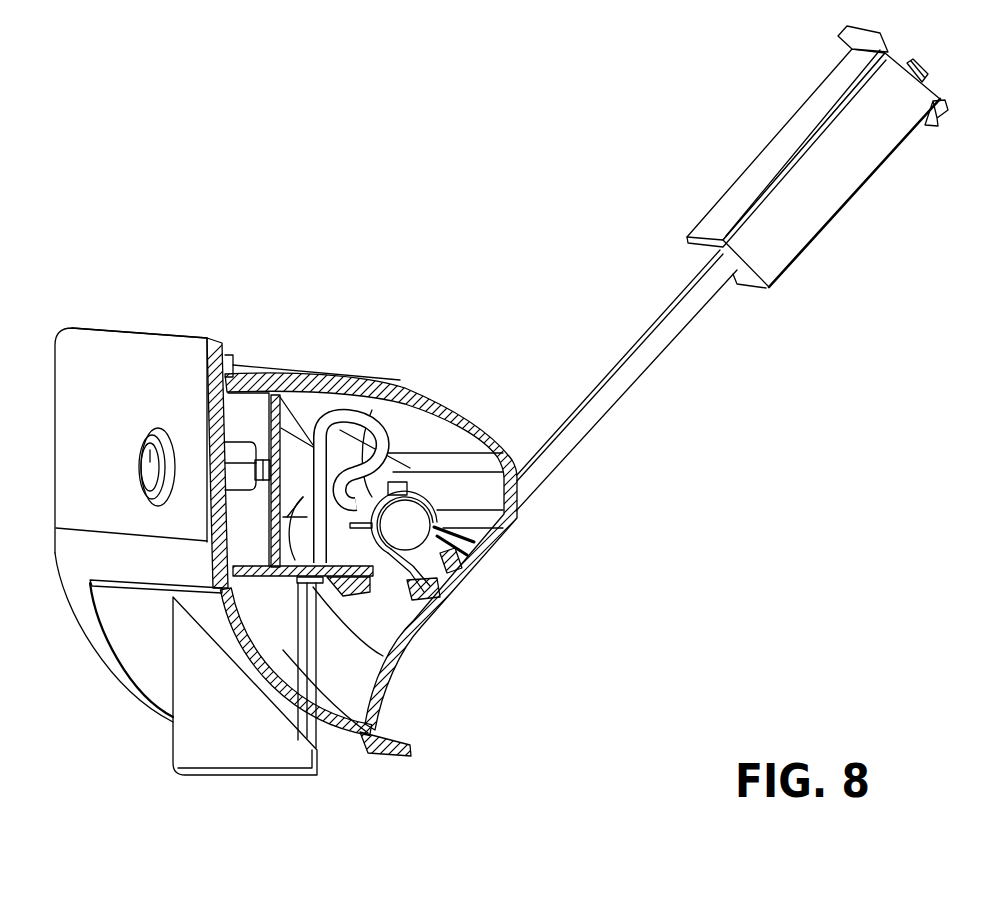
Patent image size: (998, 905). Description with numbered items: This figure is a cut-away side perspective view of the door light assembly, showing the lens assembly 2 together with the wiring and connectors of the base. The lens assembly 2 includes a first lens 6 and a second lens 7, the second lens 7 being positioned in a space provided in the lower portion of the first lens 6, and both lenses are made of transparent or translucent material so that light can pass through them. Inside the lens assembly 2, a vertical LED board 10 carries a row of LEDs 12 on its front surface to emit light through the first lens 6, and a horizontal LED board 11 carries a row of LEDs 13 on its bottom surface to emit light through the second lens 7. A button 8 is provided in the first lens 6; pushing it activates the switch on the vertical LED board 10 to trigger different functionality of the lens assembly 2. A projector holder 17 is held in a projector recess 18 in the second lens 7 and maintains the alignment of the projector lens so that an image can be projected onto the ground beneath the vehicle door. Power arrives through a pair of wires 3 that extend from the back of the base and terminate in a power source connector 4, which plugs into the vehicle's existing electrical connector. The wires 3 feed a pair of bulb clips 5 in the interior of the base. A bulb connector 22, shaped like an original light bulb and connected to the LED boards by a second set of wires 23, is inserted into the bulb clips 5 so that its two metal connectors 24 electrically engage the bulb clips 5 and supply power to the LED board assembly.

The lens assembly 2 is at (82, 338).
The first lens 6 is at (133, 340).
The button 8 is at (170, 467).
The LEDs 12 is at (261, 464).
The vertical LED board 10 is at (258, 412).
The second set of wires 23 is at (340, 417).
The bulb connector 22 is at (345, 485).
The metal connectors 24 is at (407, 512).
The bulb clips 5 is at (440, 503).
The pair of wires 3 is at (682, 313).
The power source connector 4 is at (773, 153).
The horizontal LED board 11 is at (317, 642).
The LEDs 13 is at (317, 668).
The projector holder 17 is at (380, 706).
The second lens 7 is at (147, 653).
The projector recess 18 is at (244, 764).